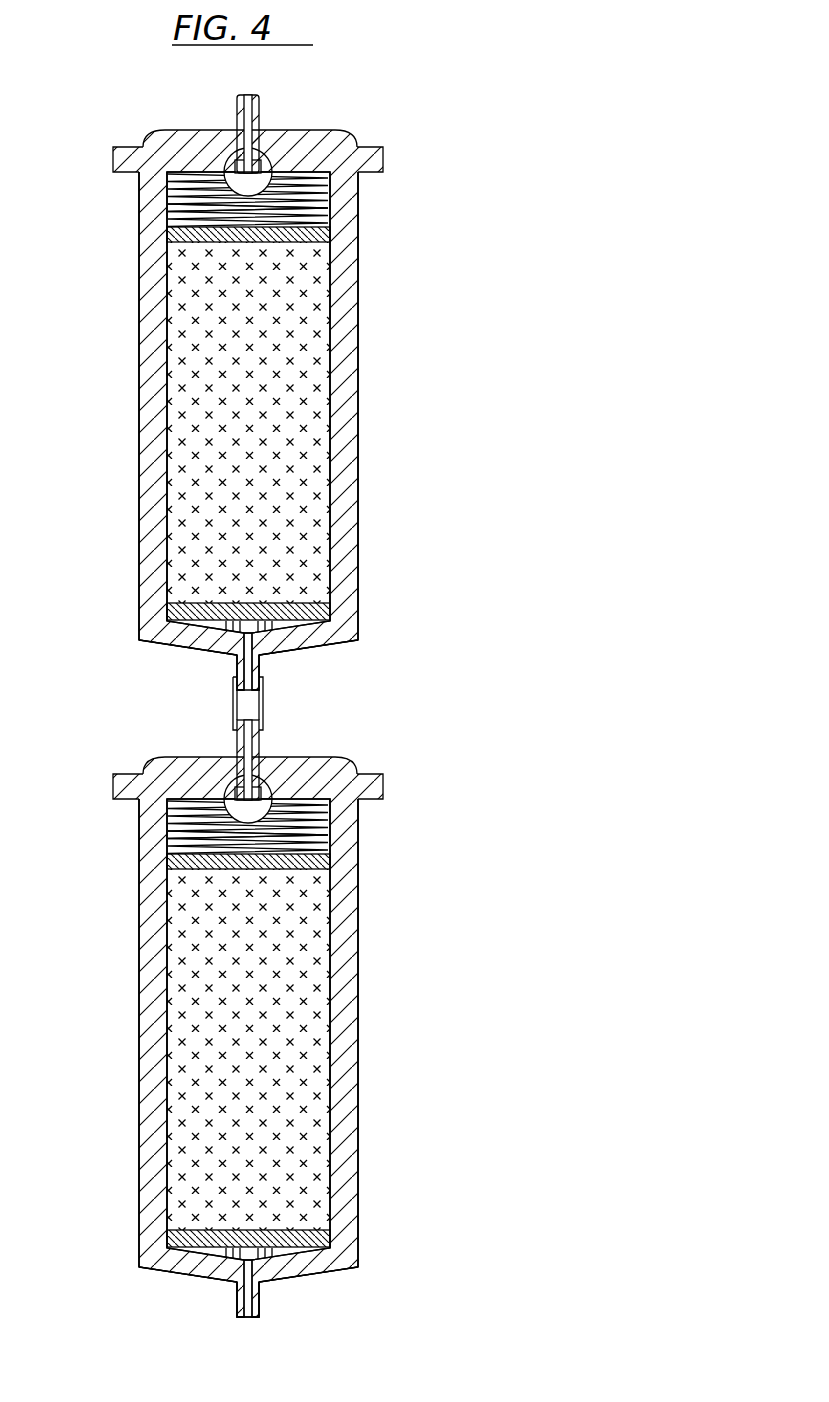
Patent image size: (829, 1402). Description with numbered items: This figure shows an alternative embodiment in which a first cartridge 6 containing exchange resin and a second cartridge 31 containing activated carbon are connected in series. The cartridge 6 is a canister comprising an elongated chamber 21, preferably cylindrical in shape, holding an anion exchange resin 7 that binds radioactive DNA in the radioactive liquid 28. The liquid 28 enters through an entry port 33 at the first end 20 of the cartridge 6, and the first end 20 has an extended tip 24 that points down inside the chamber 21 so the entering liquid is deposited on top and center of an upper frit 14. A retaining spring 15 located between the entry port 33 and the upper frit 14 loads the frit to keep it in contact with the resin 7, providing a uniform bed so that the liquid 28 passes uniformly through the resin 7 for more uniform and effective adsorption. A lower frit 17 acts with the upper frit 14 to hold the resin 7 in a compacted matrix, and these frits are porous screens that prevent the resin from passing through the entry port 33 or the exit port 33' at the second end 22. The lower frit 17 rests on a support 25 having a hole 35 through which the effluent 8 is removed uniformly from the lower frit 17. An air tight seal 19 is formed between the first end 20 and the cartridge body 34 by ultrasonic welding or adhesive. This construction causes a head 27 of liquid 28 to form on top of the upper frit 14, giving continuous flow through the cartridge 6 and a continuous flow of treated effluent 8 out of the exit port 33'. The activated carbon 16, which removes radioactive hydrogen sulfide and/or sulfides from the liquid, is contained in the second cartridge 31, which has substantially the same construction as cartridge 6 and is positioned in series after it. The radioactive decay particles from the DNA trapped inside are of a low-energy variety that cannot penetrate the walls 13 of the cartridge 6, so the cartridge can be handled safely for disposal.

The cartridge 6 is at (135, 355).
The anion exchange resin 7 is at (298, 453).
The effluent 8 is at (247, 1320).
The walls 13 is at (148, 287).
The upper frit 14 is at (318, 240).
The retaining spring 15 is at (302, 185).
The activated carbon 16 is at (297, 998).
The lower frit 17 is at (320, 617).
The air tight seal 19 is at (135, 158).
The first end 20 is at (173, 130).
The elongated chamber 21 is at (146, 432).
The second end 22 is at (217, 648).
The extended tip 24 is at (262, 162).
The support 25 is at (213, 637).
The head 27 is at (322, 208).
The radioactive liquid 28 is at (247, 58).
The second cartridge 31 is at (137, 985).
The entry port 33 is at (223, 446).
The exit port 33' is at (288, 1000).
The cartridge body 34 is at (132, 248).
The hole 35 is at (250, 622).